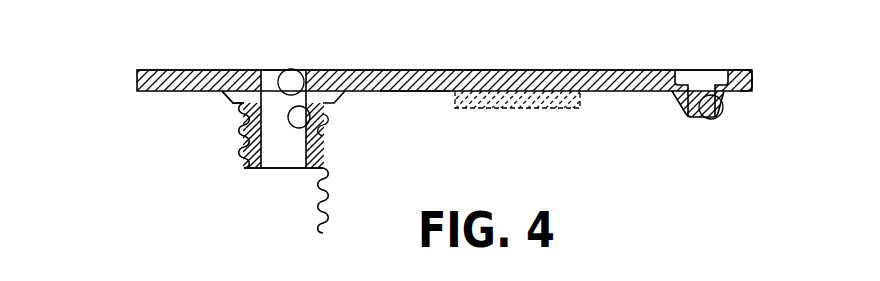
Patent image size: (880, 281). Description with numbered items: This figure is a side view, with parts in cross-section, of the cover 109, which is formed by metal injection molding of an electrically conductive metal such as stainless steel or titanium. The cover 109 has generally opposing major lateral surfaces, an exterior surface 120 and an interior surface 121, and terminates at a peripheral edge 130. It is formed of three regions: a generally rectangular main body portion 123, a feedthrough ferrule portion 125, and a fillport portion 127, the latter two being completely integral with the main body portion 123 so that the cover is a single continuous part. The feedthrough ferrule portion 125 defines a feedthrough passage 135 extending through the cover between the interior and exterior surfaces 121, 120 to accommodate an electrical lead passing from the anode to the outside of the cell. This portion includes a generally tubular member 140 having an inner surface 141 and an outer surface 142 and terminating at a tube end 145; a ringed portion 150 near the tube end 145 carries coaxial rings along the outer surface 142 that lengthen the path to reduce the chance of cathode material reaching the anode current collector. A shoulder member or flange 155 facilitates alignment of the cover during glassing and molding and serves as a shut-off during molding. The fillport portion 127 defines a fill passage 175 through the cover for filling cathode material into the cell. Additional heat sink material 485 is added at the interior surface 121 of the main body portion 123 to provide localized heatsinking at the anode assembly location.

The cover 109 is at (598, 70).
The exterior surface 120 is at (362, 70).
The interior surface 121 is at (407, 92).
The main body portion 123 is at (465, 66).
The feedthrough ferrule portion 125 is at (326, 131).
The fillport portion 127 is at (672, 100).
The peripheral edge 130 is at (753, 74).
The feedthrough passage 135 is at (281, 72).
The tubular member 140 is at (245, 126).
The inner surface 141 is at (325, 124).
The outer surface 142 is at (325, 128).
The tube end 145 is at (253, 170).
The ringed portion 150 is at (245, 141).
The flange 155 is at (223, 94).
The fill passage 175 is at (713, 119).
The heat sink material 485 is at (566, 108).